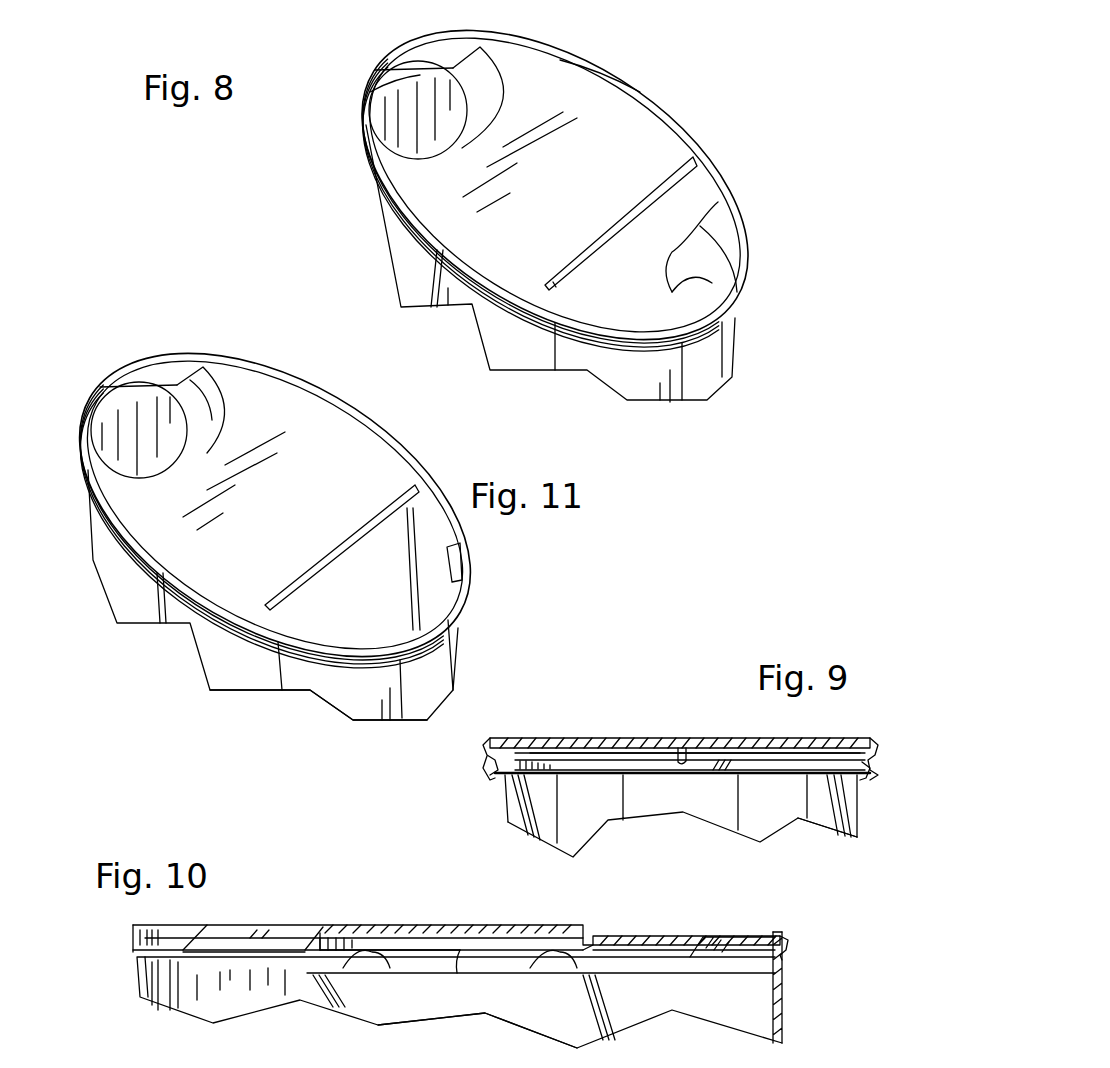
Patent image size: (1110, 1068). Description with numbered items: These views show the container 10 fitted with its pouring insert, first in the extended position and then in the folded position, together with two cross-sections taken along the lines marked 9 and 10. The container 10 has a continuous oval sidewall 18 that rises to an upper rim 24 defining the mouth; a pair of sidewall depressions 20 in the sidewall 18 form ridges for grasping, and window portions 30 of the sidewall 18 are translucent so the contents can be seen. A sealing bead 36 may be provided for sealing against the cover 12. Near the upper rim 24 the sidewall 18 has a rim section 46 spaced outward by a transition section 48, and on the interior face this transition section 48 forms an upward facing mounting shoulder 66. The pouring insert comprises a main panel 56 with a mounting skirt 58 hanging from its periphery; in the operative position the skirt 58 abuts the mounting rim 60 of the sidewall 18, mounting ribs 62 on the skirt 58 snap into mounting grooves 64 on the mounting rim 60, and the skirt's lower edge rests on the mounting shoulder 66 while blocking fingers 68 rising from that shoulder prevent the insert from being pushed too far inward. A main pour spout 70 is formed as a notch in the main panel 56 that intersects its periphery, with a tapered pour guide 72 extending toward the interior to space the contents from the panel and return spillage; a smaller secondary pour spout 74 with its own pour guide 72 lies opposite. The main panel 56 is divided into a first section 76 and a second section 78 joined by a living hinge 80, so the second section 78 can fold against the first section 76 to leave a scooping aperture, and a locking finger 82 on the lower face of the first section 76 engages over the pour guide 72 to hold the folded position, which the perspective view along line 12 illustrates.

In FIG. 8, the section line 9- 9 is at (645, 97).
In FIG. 8, the container 10 is at (363, 57).
In FIG. 11, the cover 12 is at (83, 377).
In FIG. 8, the sidewall 18 is at (405, 268).
In FIG. 11, the sidewall 18 is at (125, 597).
In FIG. 10, the sidewall 18 is at (735, 1005).
In FIG. 11, the sidewall depressions 20 is at (217, 650).
In FIG. 9, the sidewall depressions 20 is at (860, 830).
In FIG. 8, the upper rim 24 is at (711, 165).
In FIG. 11, the upper rim 24 is at (404, 460).
In FIG. 9, the upper rim 24 is at (880, 747).
In FIG. 10, the window portions 30 is at (788, 1003).
In FIG. 8, the sealing bead 36 is at (637, 333).
In FIG. 9, the sealing bead 36 is at (877, 747).
In FIG. 10, the sealing bead 36 is at (793, 952).
In FIG. 11, the rim section 46 is at (345, 660).
In FIG. 9, the rim section 46 is at (490, 748).
In FIG. 9, the transition section 48 is at (488, 760).
In FIG. 8, the main panel 56 is at (622, 100).
In FIG. 10, the main panel 56 is at (438, 925).
In FIG. 10, the mounting skirt 58 is at (423, 947).
In FIG. 8, the mounting rim 60 is at (440, 55).
In FIG. 11, the mounting rim 60 is at (157, 373).
In FIG. 10, the mounting rim 60 is at (170, 935).
In FIG. 9, the mounting ribs 62 is at (482, 760).
In FIG. 9, the mounting grooves 64 is at (857, 753).
In FIG. 8, the mounting shoulder 66 is at (367, 90).
In FIG. 9, the mounting shoulder 66 is at (533, 772).
In FIG. 10, the mounting shoulder 66 is at (135, 960).
In FIG. 9, the blocking fingers 68 is at (823, 777).
In FIG. 10, the blocking fingers 68 is at (553, 948).
In FIG. 8, the main pour spout 70 is at (497, 80).
In FIG. 11, the main pour spout 70 is at (215, 415).
In FIG. 8, the pour guide 72 is at (728, 287).
In FIG. 11, the pour guide 72 is at (200, 397).
In FIG. 9, the pour guide 72 is at (693, 765).
In FIG. 10, the pour guide 72 is at (247, 942).
In FIG. 8, the secondary pour spout 74 is at (700, 250).
In FIG. 8, the first section 76 is at (561, 217).
In FIG. 11, the first section 76 is at (287, 533).
In FIG. 9, the first section 76 is at (612, 738).
In FIG. 10, the first section 76 is at (347, 925).
In FIG. 8, the second section 78 is at (645, 278).
In FIG. 10, the second section 78 is at (661, 937).
In FIG. 11, the hinge 80 is at (302, 582).
In FIG. 10, the hinge 80 is at (612, 943).
In FIG. 9, the locking fingers 82 is at (615, 780).
In FIG. 10, the locking fingers 82 is at (463, 937).